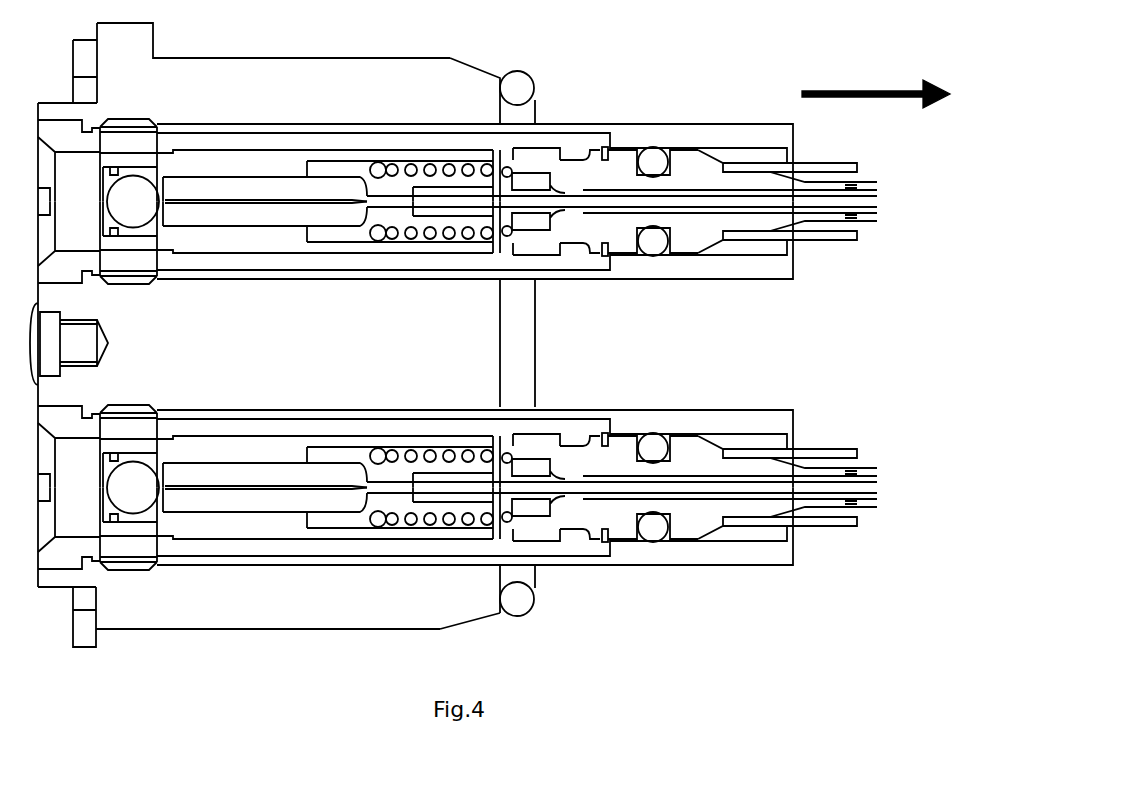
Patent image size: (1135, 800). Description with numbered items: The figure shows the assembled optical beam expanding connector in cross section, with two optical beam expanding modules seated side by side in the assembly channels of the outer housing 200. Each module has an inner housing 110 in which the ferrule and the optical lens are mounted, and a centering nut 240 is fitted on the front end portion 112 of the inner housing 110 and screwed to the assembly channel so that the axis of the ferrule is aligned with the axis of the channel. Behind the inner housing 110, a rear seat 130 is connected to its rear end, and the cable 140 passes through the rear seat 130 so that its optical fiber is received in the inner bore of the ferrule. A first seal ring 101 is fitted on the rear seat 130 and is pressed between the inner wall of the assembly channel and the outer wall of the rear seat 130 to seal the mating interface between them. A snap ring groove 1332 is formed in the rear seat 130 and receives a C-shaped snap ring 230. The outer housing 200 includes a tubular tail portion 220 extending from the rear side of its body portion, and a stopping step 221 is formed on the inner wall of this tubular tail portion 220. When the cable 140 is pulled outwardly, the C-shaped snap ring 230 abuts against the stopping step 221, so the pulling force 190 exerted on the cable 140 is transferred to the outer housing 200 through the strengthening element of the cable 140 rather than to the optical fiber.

The outer housing 200 is at (336, 75).
The tubular tail portion 220 is at (642, 130).
The stopping step 221 is at (603, 146).
The C-shaped snap ring 230 is at (598, 146).
The centering nut 240 is at (127, 282).
The inner housing 110 is at (283, 243).
The front end portion 112 is at (162, 270).
The snap ring groove 1332 is at (607, 258).
The first seal ring 101 is at (653, 243).
The rear seat 130 is at (697, 230).
The cable 140 is at (862, 177).
The pulling force 190 is at (876, 85).